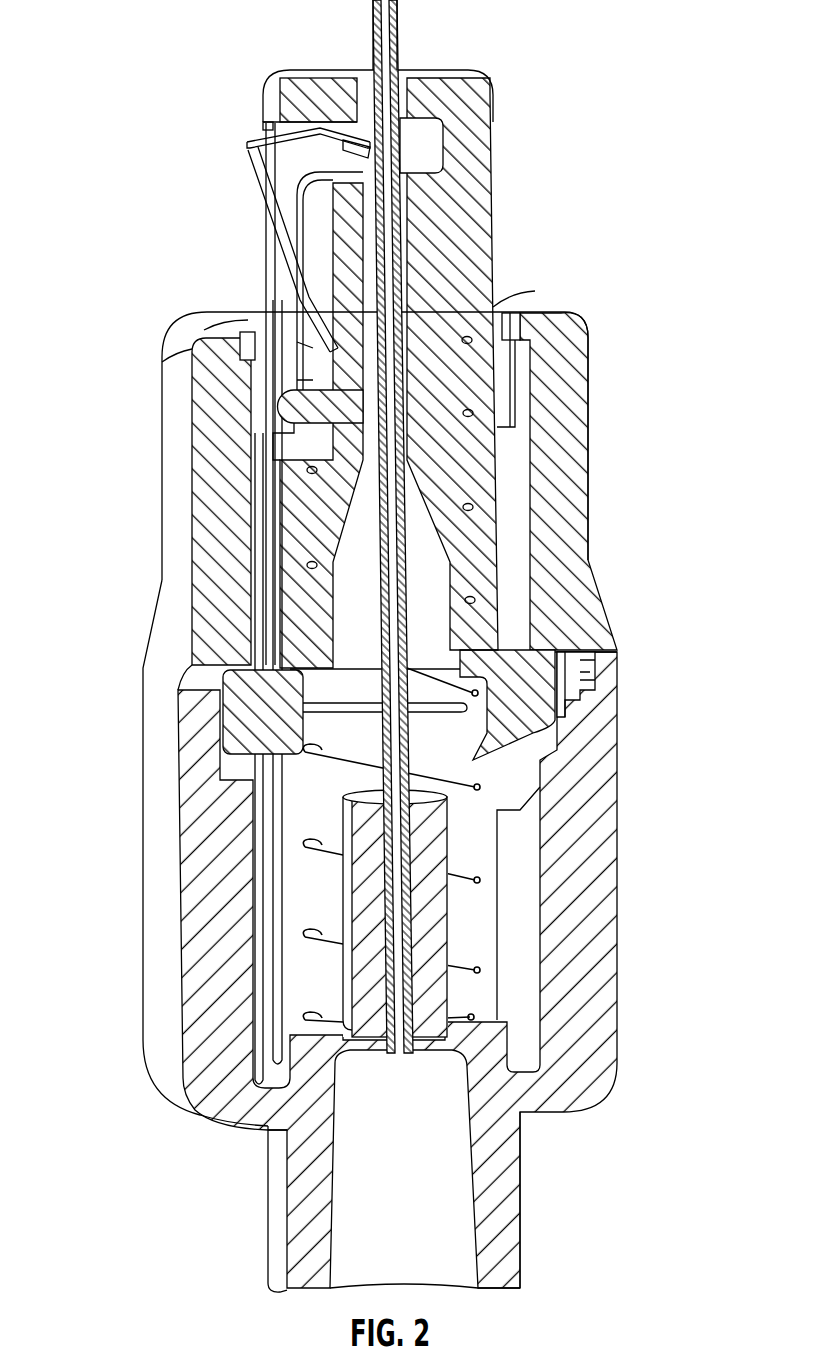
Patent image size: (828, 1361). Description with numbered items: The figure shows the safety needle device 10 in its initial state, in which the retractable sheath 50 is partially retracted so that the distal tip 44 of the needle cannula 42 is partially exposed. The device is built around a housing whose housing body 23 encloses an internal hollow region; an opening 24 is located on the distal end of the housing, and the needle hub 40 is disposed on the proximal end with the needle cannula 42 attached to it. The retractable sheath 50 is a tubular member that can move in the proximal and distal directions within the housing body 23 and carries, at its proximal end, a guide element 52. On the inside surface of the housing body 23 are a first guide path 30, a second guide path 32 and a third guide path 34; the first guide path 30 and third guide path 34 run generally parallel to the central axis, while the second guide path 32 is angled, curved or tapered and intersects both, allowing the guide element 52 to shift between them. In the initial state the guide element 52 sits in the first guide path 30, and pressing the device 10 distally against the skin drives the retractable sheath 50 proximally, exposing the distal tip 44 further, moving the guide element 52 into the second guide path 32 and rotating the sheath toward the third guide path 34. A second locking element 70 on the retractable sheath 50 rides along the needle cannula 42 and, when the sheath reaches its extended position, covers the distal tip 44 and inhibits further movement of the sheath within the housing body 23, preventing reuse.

The safety needle device 10 is at (126, 33).
The housing body 23 is at (590, 870).
The opening 24 is at (503, 308).
The first guide path 30 is at (563, 652).
The second guide path 32 is at (520, 787).
The third guide path 34 is at (500, 887).
The needle hub 40 is at (450, 1047).
The needle cannula 42 is at (402, 272).
The distal tip 44 is at (373, 13).
The retractable sheath 50 is at (467, 123).
The guide element 52 is at (523, 720).
The second locking element 70 is at (256, 180).